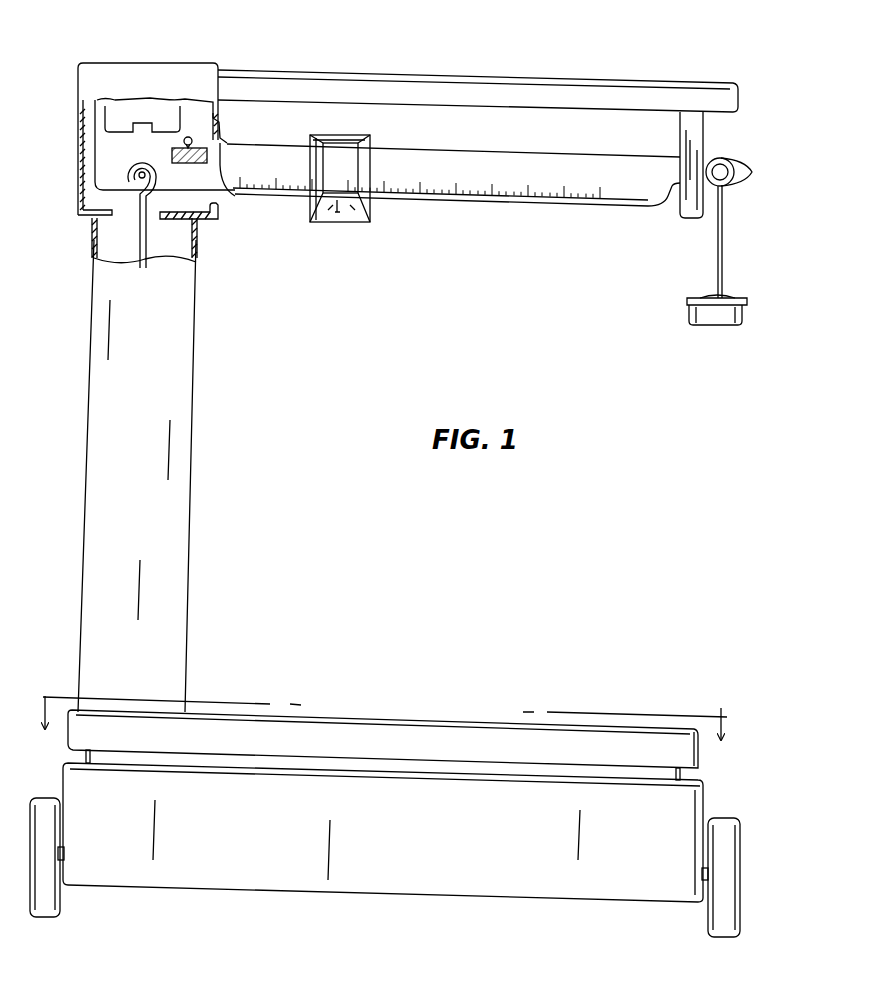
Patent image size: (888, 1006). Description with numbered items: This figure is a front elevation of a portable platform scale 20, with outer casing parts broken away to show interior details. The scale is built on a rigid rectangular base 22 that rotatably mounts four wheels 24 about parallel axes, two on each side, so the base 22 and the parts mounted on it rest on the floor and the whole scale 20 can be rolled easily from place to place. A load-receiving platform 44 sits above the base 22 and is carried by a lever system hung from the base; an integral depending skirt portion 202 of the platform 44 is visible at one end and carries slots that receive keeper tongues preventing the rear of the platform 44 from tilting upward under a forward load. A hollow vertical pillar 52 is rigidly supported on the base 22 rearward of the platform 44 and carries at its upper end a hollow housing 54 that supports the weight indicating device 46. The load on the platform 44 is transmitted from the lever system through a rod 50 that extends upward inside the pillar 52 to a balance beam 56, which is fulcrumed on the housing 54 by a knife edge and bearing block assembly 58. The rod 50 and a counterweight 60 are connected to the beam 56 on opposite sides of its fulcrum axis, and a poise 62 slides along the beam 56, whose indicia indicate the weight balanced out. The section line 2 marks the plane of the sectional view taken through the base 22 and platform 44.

The section line 2- 2 is at (384, 707).
The portable platform scale 20 is at (252, 434).
The rigid rectangular base 22 is at (408, 841).
The wheels 24 is at (46, 916).
The load-receiving platform 44 is at (473, 719).
The weight indicating device 46 is at (510, 215).
The rod 50 is at (146, 244).
The hollow vertical pillar 52 is at (191, 592).
The hollow housing 54 is at (160, 73).
The balance beam 56 is at (599, 160).
The knife edge and bearing block assembly 58 is at (208, 163).
The counterweight 60 is at (722, 325).
The poise 62 is at (355, 139).
The depending skirt portion 202 is at (702, 755).